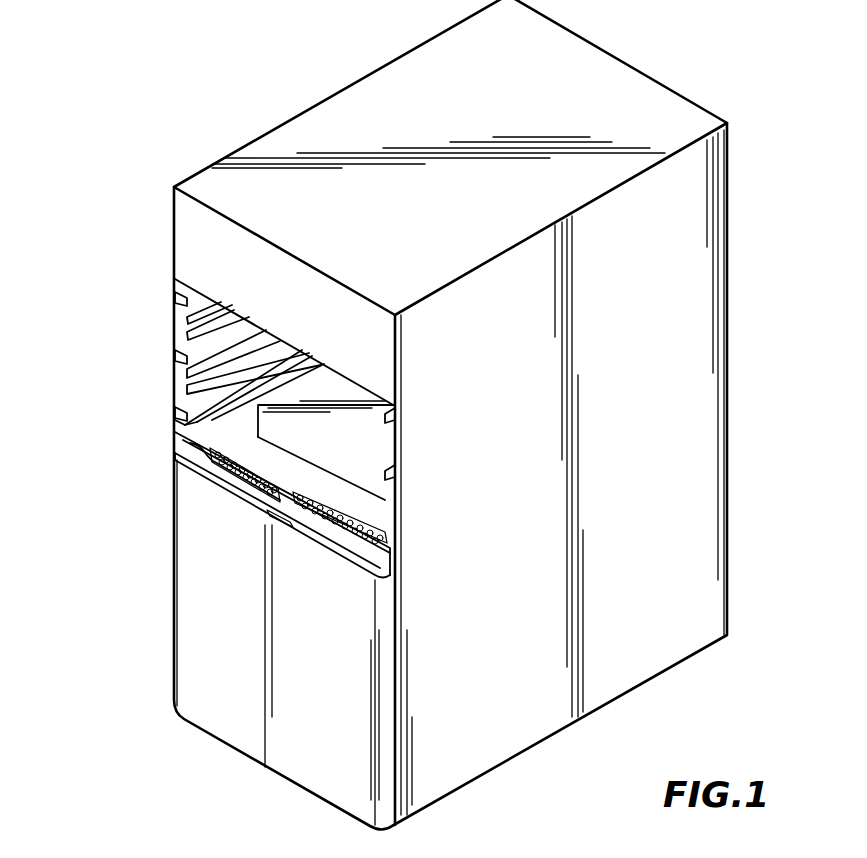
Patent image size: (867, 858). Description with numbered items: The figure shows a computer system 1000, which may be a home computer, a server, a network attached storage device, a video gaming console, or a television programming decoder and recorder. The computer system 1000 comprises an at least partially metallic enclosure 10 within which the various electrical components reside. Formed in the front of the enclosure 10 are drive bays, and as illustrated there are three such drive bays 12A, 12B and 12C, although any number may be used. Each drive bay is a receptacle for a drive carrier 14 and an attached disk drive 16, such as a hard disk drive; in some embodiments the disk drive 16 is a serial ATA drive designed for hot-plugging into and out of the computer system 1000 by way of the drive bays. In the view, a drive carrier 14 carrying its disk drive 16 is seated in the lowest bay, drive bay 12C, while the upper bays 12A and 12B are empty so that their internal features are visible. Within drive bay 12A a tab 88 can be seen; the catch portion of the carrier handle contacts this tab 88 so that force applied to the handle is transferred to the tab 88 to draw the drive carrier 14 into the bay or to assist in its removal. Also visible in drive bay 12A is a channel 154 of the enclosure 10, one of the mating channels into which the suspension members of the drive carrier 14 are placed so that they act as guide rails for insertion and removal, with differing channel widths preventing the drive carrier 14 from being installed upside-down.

The computer system 1000 is at (690, 70).
The enclosure 10 is at (651, 272).
The tab 88 is at (174, 298).
The channel 154 is at (165, 326).
The drive bay 12A is at (165, 337).
The drive bay 12B is at (165, 382).
The drive bay 12C is at (162, 433).
The disk drive 16 is at (365, 447).
The drive carrier 14 is at (377, 517).